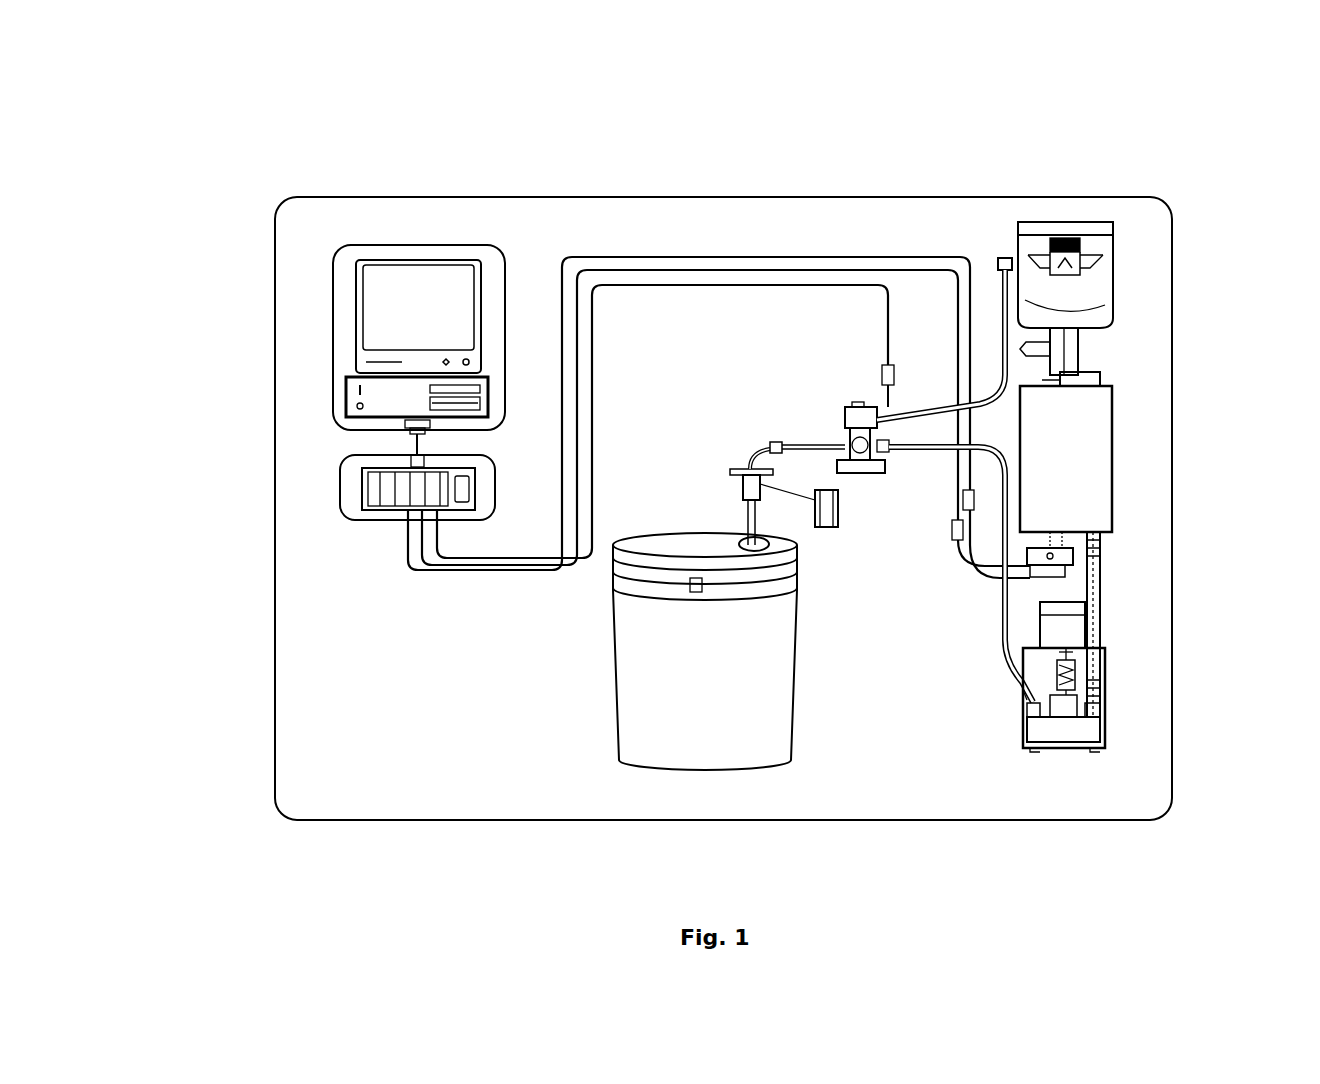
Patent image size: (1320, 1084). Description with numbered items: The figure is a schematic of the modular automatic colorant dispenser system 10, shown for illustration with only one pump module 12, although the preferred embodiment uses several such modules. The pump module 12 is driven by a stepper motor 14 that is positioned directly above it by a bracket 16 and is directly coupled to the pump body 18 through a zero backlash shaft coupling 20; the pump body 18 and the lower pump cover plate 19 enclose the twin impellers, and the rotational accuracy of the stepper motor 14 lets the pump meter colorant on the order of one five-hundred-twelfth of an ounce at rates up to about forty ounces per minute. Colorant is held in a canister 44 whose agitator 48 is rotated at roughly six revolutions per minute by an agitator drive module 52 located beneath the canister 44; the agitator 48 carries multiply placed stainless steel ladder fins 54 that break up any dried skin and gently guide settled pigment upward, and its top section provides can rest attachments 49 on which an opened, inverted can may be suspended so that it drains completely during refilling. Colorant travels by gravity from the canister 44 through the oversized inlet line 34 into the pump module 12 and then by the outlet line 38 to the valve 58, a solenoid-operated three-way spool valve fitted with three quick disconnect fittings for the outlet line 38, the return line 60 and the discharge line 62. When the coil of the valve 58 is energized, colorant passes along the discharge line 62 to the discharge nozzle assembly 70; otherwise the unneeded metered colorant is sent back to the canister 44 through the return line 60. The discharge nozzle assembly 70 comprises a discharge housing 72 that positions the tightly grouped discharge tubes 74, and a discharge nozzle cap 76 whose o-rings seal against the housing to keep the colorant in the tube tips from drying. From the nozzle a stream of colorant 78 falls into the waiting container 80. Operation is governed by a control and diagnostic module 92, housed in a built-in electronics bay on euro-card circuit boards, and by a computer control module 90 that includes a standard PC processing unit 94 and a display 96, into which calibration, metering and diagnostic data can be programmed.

The modular automatic colorant dispenser system 10 is at (648, 195).
The pump module 12 is at (1105, 732).
The stepper motor 14 is at (1063, 620).
The bracket 16 is at (1020, 695).
The pump body 18 is at (1087, 728).
The lower pump cover plate 19 is at (1070, 743).
The zero backlash shaft coupling 20 is at (1073, 671).
The inlet line 34 is at (1097, 590).
The outlet line 38 is at (1003, 603).
The canister 44 is at (1082, 300).
The agitator 48 is at (1080, 337).
The can rest attachments 49 is at (1092, 248).
The agitator drive module 52 is at (1063, 556).
The ladder fins 54 is at (1092, 382).
The valve 58 is at (858, 420).
The return line 60 is at (920, 375).
The discharge line 62 is at (817, 440).
The discharge nozzle assembly 70 is at (727, 483).
The discharge housing 72 is at (740, 467).
The discharge tubes 74 is at (763, 443).
The discharge nozzle cap 76 is at (838, 512).
The stream of colorant 78 is at (747, 540).
The waiting container 80 is at (655, 735).
The computer control module 90 is at (428, 245).
The control and diagnostic module 92 is at (385, 520).
The processing unit 94 is at (392, 395).
The display 96 is at (388, 310).